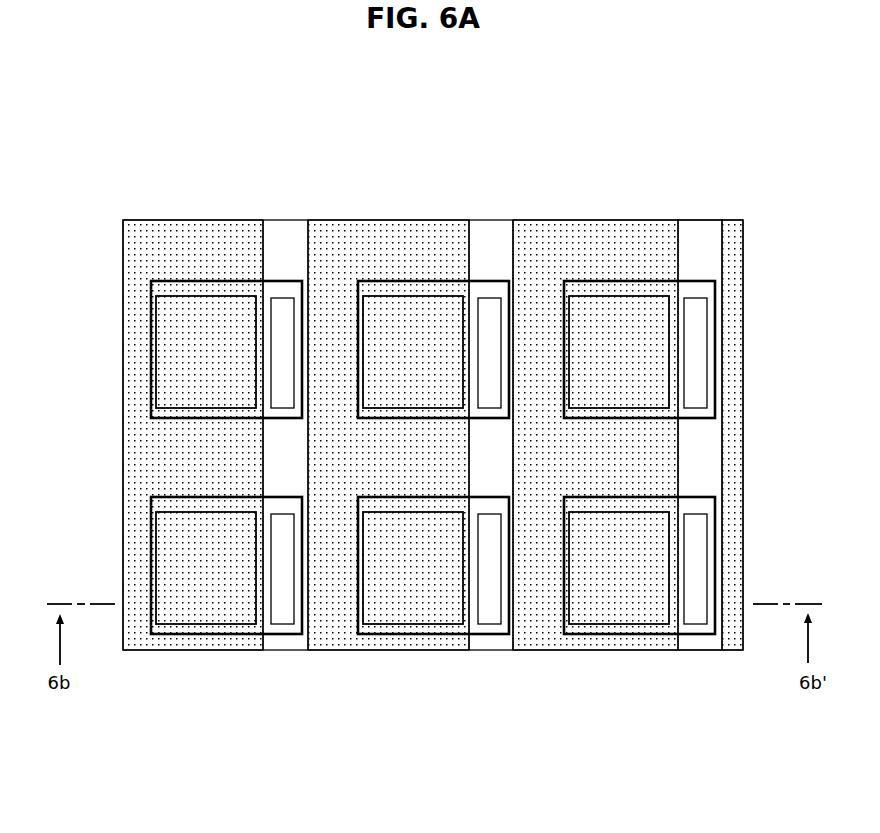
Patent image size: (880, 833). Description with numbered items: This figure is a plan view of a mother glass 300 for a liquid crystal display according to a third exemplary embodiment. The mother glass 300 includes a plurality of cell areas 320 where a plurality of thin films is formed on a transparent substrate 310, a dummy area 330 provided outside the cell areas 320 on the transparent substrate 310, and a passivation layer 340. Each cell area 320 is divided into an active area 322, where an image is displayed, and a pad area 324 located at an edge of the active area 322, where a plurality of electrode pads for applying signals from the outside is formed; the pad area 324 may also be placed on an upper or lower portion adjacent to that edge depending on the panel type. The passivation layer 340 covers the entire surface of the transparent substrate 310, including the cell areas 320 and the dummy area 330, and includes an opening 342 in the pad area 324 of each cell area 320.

The mother glass 300 is at (93, 182).
The transparent substrate 310 is at (123, 305).
The cell area 320 is at (177, 279).
The active area 322 is at (193, 307).
The pad area 324 is at (282, 307).
The dummy area 330 is at (140, 534).
The passivation layer 340 is at (405, 242).
The opening 342 is at (703, 453).